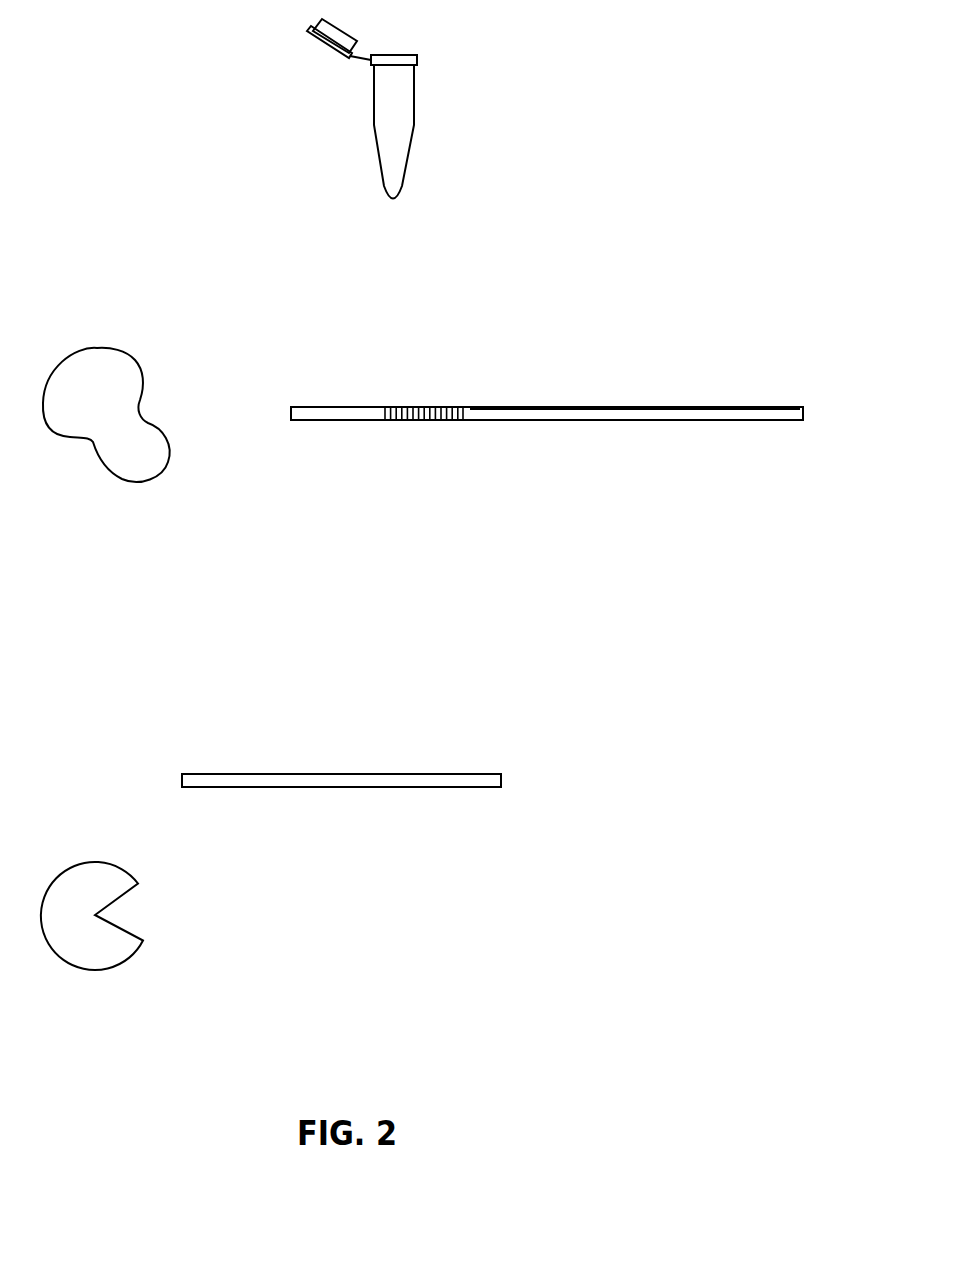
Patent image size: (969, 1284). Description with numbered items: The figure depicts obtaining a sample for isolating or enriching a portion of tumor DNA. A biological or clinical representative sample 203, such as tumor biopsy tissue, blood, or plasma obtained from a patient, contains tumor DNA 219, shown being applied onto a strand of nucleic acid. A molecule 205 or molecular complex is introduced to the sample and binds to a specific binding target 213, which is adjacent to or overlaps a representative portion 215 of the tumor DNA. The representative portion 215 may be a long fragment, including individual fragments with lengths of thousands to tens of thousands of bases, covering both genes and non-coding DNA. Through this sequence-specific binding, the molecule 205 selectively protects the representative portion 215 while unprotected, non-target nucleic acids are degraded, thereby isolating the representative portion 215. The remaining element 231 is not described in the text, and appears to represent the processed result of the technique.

The representative sample 203 is at (372, 107).
The molecule 205 is at (78, 348).
The binding target 213 is at (432, 421).
The representative portion 215 is at (689, 420).
The tumor DNA 219 is at (548, 283).
The processed sample 231 is at (99, 970).